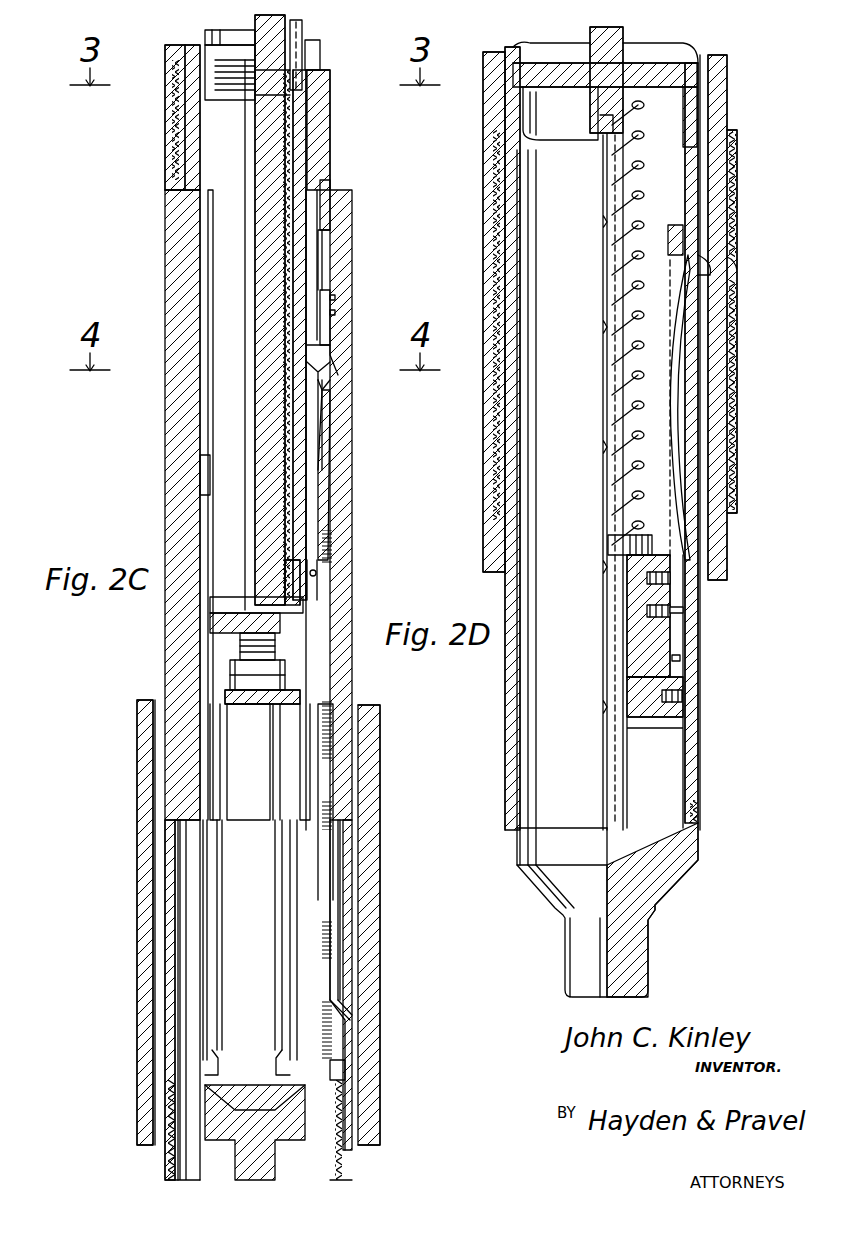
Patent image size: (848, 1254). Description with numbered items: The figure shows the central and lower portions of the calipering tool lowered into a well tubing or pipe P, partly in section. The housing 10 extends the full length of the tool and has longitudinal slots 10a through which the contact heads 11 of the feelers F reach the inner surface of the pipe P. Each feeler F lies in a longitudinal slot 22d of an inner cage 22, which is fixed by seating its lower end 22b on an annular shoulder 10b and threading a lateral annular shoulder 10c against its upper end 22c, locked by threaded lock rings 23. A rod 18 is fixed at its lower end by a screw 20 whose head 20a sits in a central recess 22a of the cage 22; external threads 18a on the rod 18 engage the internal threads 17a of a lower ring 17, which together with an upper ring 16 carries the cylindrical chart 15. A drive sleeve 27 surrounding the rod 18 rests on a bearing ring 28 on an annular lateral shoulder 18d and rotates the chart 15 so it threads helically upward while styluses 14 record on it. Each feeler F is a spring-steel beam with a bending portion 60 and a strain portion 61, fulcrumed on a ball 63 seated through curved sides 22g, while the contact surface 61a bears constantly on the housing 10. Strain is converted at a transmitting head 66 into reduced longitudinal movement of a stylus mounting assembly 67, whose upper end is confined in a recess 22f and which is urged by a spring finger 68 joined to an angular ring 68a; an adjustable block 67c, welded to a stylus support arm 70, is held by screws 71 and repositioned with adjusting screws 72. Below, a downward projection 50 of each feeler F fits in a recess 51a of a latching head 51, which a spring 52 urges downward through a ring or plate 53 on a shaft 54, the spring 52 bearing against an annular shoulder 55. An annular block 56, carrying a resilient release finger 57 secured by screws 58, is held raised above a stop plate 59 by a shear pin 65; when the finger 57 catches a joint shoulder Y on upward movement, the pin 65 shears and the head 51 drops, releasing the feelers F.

In FIG. 2C, the housing 10 is at (340, 520).
In FIG. 2D, the housing 10 is at (700, 73).
In FIG. 2C, the longitudinal slots 10a is at (212, 884).
In FIG. 2C, the annular shoulder 10b is at (165, 811).
In FIG. 2C, the lateral annular shoulder 10c is at (172, 208).
In FIG. 2C, the contact head 11 is at (352, 1008).
In FIG. 2C, the stylus 14 is at (320, 93).
In FIG. 2C, the chart 15 is at (325, 131).
In FIG. 2C, the upper ring 16 is at (302, 33).
In FIG. 2C, the lower ring 17 is at (302, 605).
In FIG. 2C, the internal threads 17a is at (283, 558).
In FIG. 2C, the rod 18 is at (266, 518).
In FIG. 2C, the external threads 18a is at (292, 496).
In FIG. 2C, the annular lateral shoulder 18d is at (282, 94).
In FIG. 2C, the screw 20 is at (225, 643).
In FIG. 2C, the screw head 20a is at (230, 678).
In FIG. 2C, the inner cage 22 is at (200, 661).
In FIG. 2C, the centrally located recess 22a is at (302, 698).
In FIG. 2C, the lower end of cage 22b is at (178, 848).
In FIG. 2C, the upper end of cage 22c is at (200, 183).
In FIG. 2C, the longitudinal slots 22d is at (272, 756).
In FIG. 2C, the recess 22f is at (200, 236).
In FIG. 2C, the curved sides 22g is at (320, 580).
In FIG. 2C, the threaded lock rings 23 is at (170, 85).
In FIG. 2C, the drive sleeve 27 is at (285, 50).
In FIG. 2C, the bearing ring 28 is at (280, 86).
In FIG. 2C, the projection 50 is at (270, 1040).
In FIG. 2C, the latching head 51 is at (300, 1116).
In FIG. 2C, the recess 51a is at (236, 1085).
In FIG. 2D, the spring 52 is at (632, 180).
In FIG. 2D, the ring or plate 53 is at (615, 543).
In FIG. 2D, the shaft 54 is at (612, 368).
In FIG. 2D, the annular shoulder 55 is at (700, 100).
In FIG. 2D, the annular block 56 is at (632, 643).
In FIG. 2D, the resilient release finger 57 is at (710, 220).
In FIG. 2D, the screws 58 is at (628, 588).
In FIG. 2D, the stop plate 59 is at (632, 693).
In FIG. 2C, the bending portion 60 is at (212, 855).
In FIG. 2C, the strain portion 61 is at (330, 460).
In FIG. 2C, the contact surface 61a is at (338, 374).
In FIG. 2C, the ball 63 is at (316, 568).
In FIG. 2D, the shear pin 65 is at (700, 610).
In FIG. 2C, the transmitting head 66 is at (318, 373).
In FIG. 2C, the stylus mounting assembly 67 is at (340, 336).
In FIG. 2C, the adjustable block 67c is at (320, 308).
In FIG. 2C, the resilient spring finger 68 is at (322, 410).
In FIG. 2C, the angular ring 68a is at (200, 476).
In FIG. 2C, the stylus support arm 70 is at (322, 185).
In FIG. 2C, the screws 71 is at (336, 296).
In FIG. 2C, the adjusting screws 72 is at (336, 310).
In FIG. 2C, the feeler F is at (340, 758).
In FIG. 2C, the pipe P is at (370, 830).
In FIG. 2D, the pipe P is at (720, 160).
In FIG. 2D, the shoulder Y is at (722, 270).